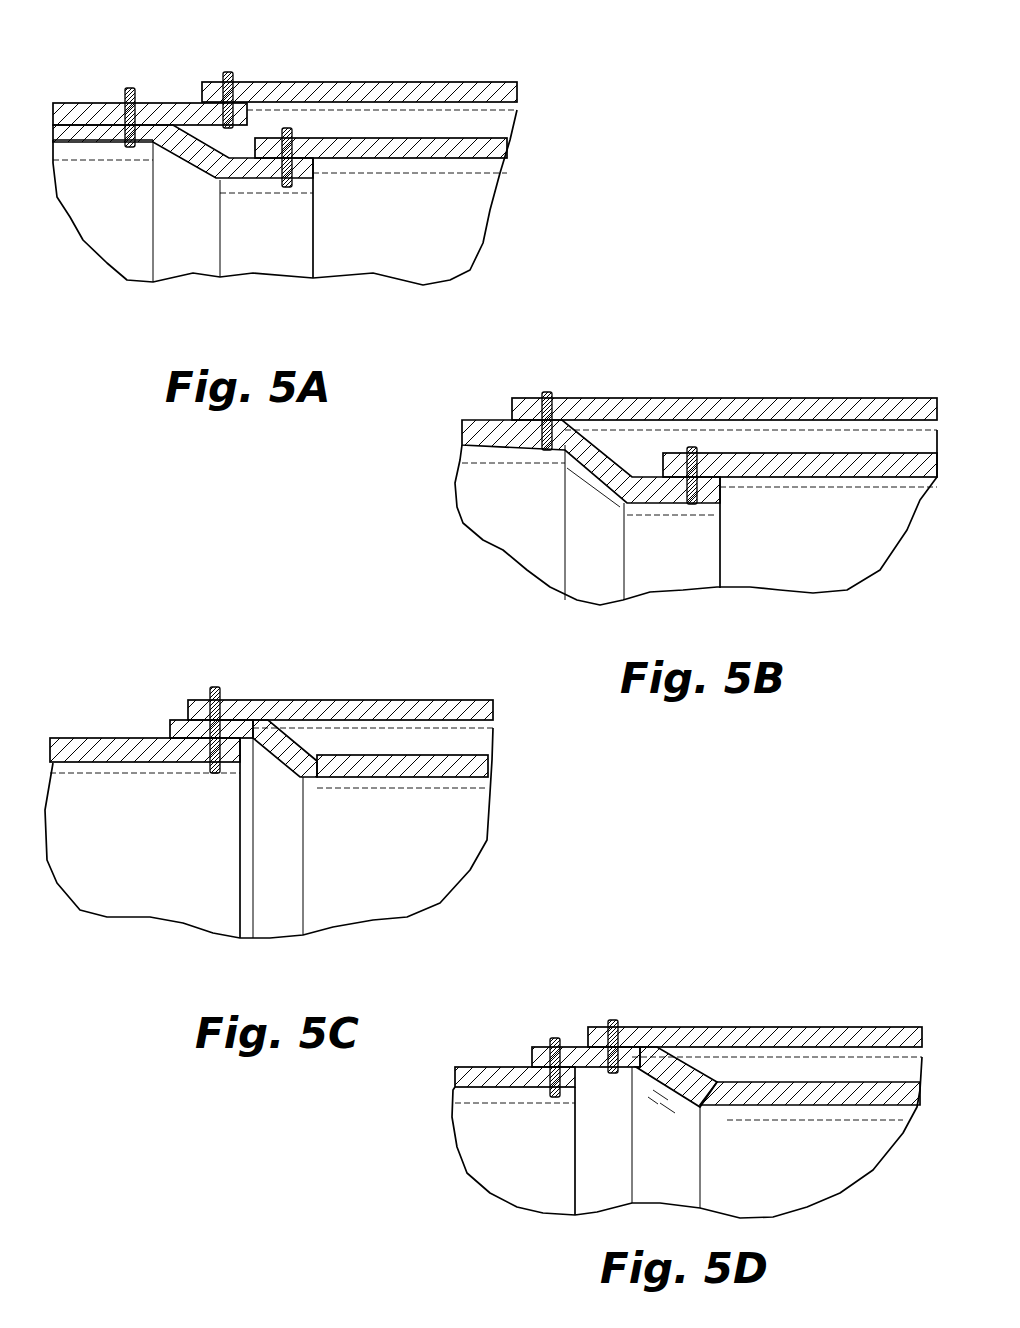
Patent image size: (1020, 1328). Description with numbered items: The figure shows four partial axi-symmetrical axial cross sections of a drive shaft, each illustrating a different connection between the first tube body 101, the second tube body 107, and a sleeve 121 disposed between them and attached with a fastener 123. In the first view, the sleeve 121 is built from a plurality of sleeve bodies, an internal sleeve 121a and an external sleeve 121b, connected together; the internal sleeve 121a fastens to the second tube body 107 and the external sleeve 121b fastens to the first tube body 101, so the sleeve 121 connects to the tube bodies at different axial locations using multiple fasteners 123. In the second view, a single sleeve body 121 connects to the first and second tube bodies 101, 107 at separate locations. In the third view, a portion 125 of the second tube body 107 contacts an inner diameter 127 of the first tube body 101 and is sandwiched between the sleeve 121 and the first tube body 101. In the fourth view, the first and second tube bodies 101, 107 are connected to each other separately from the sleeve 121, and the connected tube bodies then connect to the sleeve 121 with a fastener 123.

In FIG. 5A, the first tube body 101 is at (428, 96).
In FIG. 5B, the first tube body 101 is at (855, 405).
In FIG. 5C, the first tube body 101 is at (428, 711).
In FIG. 5D, the first tube body 101 is at (830, 1030).
In FIG. 5A, the second tube body 107 is at (428, 160).
In FIG. 5B, the second tube body 107 is at (835, 478).
In FIG. 5C, the second tube body 107 is at (430, 766).
In FIG. 5D, the second tube body 107 is at (838, 1102).
In FIG. 5B, the sleeve 121 is at (598, 466).
In FIG. 5C, the sleeve 121 is at (82, 746).
In FIG. 5D, the sleeve 121 is at (490, 1076).
In FIG. 5A, the internal sleeve 121a is at (236, 180).
In FIG. 5A, the external sleeve 121b is at (118, 103).
In FIG. 5A, the fastener 123 is at (228, 72).
In FIG. 5B, the fastener 123 is at (535, 440).
In FIG. 5C, the fastener 123 is at (212, 774).
In FIG. 5D, the fastener 123 is at (612, 1020).
In FIG. 5C, the portion 125 is at (226, 720).
In FIG. 5D, the portion 125 is at (585, 1068).
In FIG. 5C, the inner diameter 127 is at (268, 712).
In FIG. 5D, the inner diameter 127 is at (640, 1035).